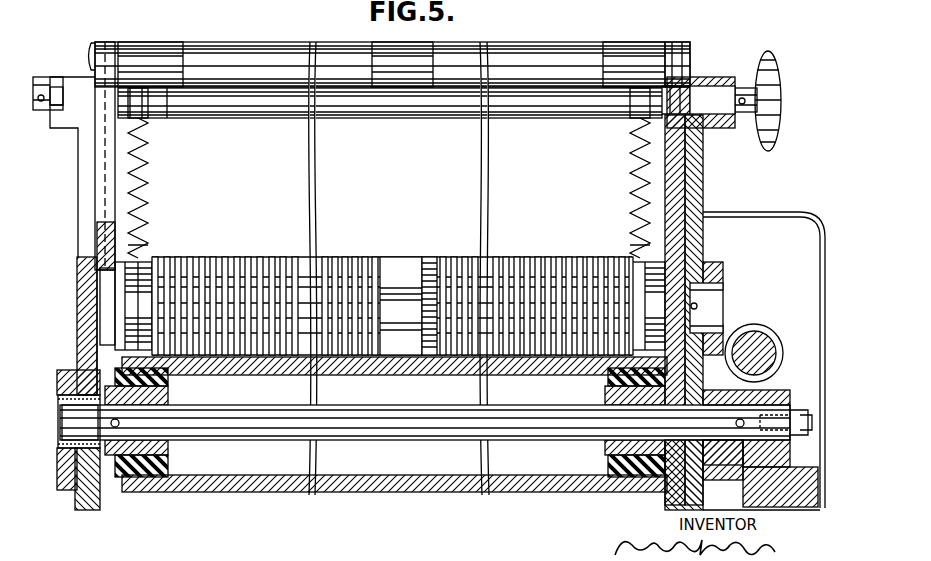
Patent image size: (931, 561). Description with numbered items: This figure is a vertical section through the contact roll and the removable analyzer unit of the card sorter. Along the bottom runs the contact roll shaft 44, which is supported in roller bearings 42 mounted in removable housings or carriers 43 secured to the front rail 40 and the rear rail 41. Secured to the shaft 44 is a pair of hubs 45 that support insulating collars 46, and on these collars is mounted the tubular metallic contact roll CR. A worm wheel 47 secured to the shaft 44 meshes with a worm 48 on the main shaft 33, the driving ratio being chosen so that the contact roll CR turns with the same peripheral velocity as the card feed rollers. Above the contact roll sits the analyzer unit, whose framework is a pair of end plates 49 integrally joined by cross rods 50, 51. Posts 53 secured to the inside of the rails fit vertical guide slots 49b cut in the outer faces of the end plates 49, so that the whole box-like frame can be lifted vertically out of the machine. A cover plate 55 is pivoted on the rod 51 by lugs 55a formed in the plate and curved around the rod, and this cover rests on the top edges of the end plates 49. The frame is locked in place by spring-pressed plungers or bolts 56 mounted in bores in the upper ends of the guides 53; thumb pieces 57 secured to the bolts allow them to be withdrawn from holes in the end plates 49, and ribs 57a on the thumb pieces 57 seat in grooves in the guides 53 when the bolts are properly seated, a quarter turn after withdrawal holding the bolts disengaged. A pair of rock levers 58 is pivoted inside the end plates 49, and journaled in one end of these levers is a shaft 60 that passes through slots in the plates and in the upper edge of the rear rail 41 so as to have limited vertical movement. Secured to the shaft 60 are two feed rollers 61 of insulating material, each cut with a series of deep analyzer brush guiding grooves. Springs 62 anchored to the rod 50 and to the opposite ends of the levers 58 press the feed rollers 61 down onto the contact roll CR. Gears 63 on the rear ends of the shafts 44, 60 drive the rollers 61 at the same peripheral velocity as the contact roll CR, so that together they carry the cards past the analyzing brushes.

The main shaft 33 is at (758, 338).
The front rail 40 is at (77, 311).
The rear rail 41 is at (680, 505).
The roller bearings 42 is at (90, 494).
The housings or carriers 43 is at (66, 496).
The contact roll shaft 44 is at (413, 442).
The hubs 45 is at (168, 400).
The insulating collars 46 is at (168, 382).
The worm wheel 47 is at (752, 383).
The worm 48 is at (778, 335).
The end plates 49 is at (140, 186).
The vertical guide slots 49b is at (107, 150).
The cross rod 50 is at (388, 105).
The cross rod 51 is at (339, 62).
The posts 53 is at (78, 188).
The cover plate 55 is at (229, 42).
The lugs 55a is at (147, 46).
The spring-pressed plungers or bolts 56 is at (704, 78).
The thumb pieces 57 is at (40, 76).
The ribs 57a is at (60, 96).
The rock levers 58 is at (120, 268).
The shaft 60 is at (395, 296).
The feed rollers 61 is at (245, 256).
The springs 62 is at (140, 213).
The gears 63 is at (725, 262).
The contact roll CR is at (435, 490).